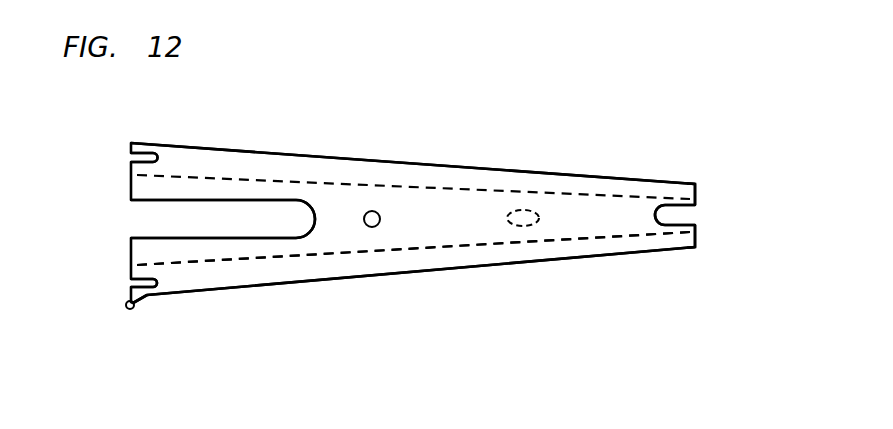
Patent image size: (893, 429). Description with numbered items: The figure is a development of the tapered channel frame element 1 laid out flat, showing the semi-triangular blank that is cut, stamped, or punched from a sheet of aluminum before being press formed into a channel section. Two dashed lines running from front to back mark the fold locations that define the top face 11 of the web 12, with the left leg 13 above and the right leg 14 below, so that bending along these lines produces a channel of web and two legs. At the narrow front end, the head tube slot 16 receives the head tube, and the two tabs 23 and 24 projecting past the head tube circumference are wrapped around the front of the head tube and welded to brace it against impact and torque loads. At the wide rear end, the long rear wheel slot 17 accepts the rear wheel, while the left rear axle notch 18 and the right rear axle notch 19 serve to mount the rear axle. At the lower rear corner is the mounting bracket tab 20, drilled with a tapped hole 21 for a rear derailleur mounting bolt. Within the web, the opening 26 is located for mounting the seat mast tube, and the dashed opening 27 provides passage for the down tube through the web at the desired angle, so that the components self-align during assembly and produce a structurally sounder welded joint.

The tapered channel frame element 1 is at (598, 170).
The top face of the web 11 is at (410, 198).
The web 12 is at (413, 248).
The left leg 13 is at (207, 160).
The right leg 14 is at (380, 268).
The head tube slot 16 is at (700, 217).
The rear wheel slot 17 is at (118, 222).
The left rear axle notch 18 is at (117, 158).
The right rear axle notch 19 is at (118, 282).
The mounting bracket tab 20 is at (127, 307).
The hole 21 is at (133, 307).
The tab 23 is at (687, 181).
The tab 24 is at (697, 248).
The opening 26 is at (368, 226).
The opening 27 is at (537, 223).